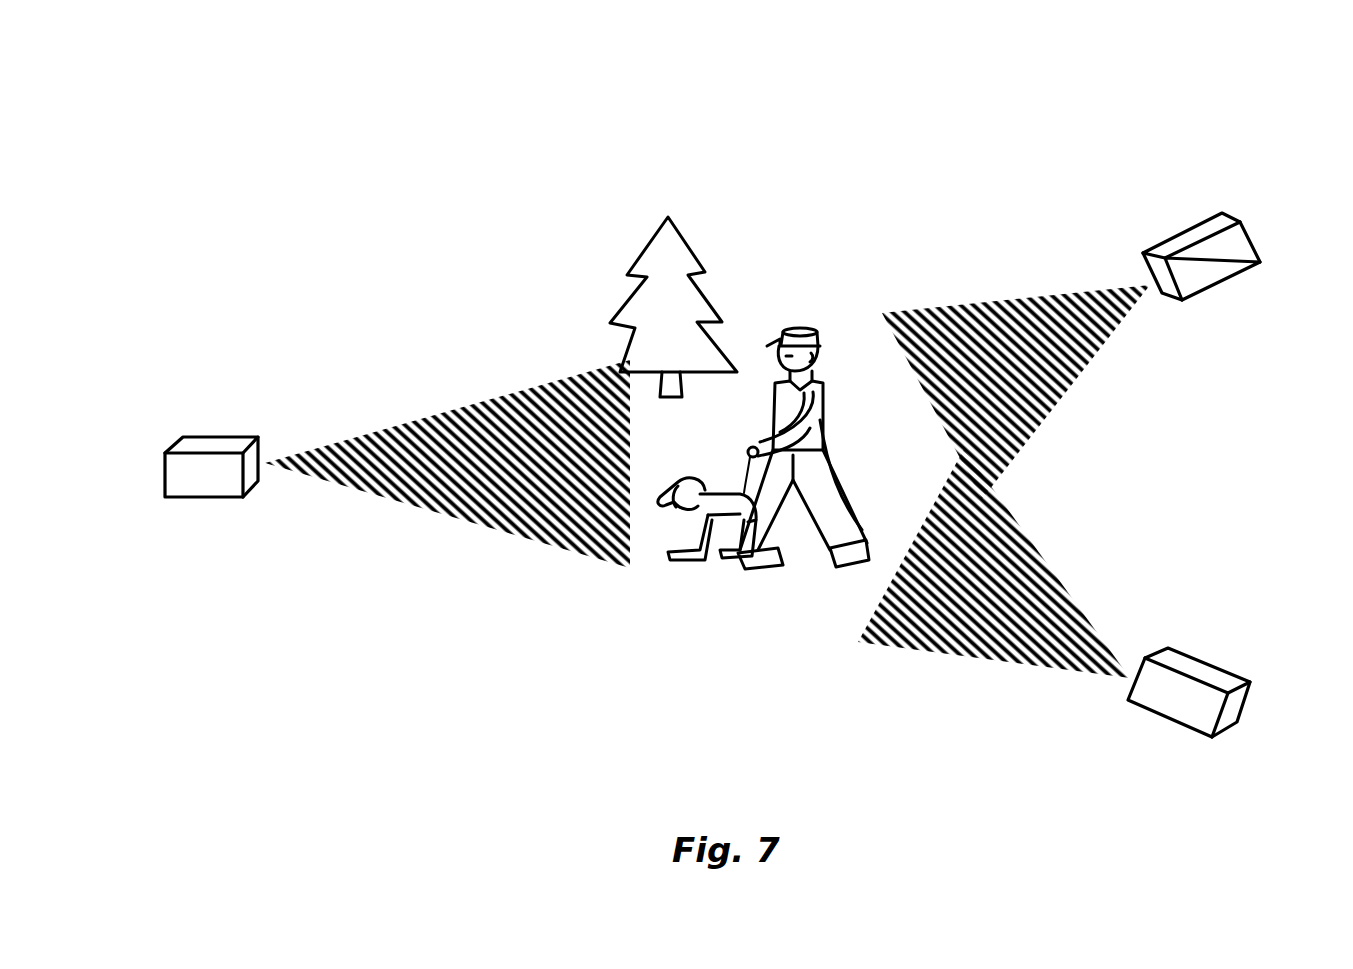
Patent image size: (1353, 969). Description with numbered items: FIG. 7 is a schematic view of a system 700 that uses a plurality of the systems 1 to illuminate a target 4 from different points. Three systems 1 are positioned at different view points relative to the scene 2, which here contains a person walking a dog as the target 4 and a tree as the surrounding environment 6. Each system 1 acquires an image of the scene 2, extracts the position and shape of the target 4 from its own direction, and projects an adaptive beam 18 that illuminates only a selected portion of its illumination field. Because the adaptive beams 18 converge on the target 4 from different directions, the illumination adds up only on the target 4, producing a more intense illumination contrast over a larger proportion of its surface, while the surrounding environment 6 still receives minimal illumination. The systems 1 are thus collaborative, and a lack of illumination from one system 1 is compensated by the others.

The system 700 is at (1067, 142).
The system 1 is at (203, 437).
The adaptive beam 18 is at (428, 513).
The surrounding environment 6 is at (641, 244).
The scene 2 is at (793, 251).
The target 4 is at (750, 575).